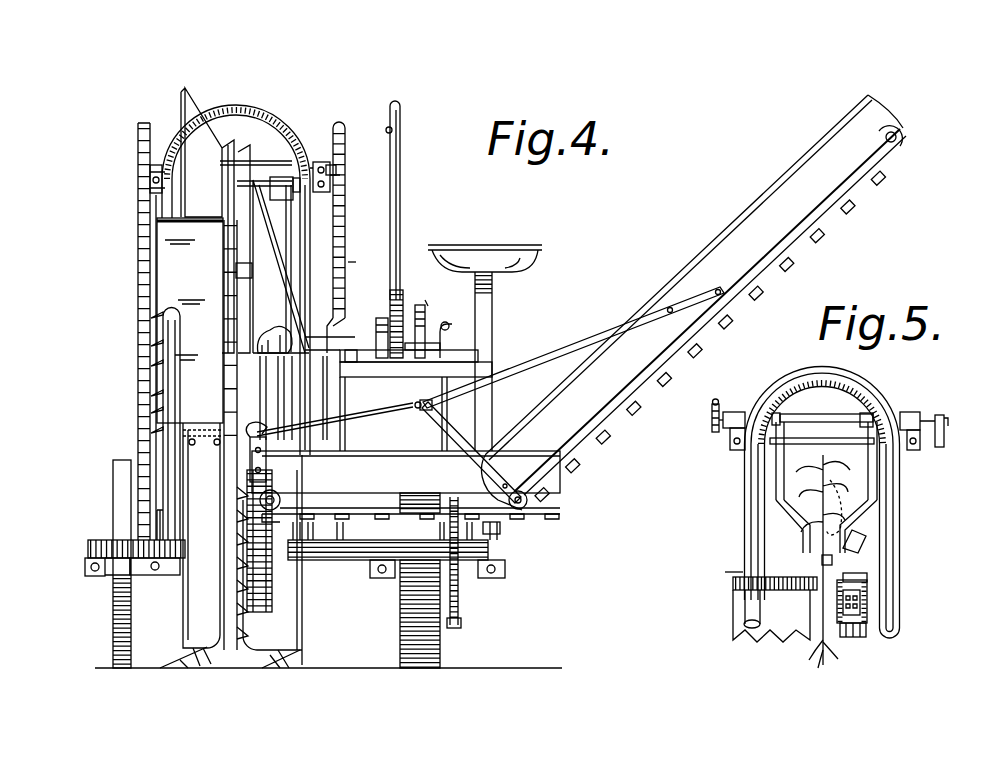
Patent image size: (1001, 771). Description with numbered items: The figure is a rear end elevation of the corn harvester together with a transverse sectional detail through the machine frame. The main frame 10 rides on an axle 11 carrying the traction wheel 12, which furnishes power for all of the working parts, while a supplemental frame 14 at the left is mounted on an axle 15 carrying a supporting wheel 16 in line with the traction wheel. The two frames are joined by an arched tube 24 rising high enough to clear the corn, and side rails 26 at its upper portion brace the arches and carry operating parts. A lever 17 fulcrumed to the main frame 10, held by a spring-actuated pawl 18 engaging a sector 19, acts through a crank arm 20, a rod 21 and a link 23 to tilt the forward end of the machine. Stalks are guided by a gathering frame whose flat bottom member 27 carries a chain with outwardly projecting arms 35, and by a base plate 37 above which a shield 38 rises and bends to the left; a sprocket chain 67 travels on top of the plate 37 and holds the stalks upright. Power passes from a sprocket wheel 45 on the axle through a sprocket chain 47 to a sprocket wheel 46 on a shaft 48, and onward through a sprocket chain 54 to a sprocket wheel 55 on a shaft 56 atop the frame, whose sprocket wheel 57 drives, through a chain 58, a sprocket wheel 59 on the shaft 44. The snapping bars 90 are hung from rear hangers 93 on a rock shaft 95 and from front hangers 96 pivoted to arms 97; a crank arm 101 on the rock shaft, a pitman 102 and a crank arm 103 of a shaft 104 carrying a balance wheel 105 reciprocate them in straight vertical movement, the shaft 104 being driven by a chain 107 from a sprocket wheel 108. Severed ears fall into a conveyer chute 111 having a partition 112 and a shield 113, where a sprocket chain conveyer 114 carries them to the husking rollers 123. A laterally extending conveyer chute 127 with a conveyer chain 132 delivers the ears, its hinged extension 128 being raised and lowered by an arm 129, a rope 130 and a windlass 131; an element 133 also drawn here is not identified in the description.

In FIG. 4, the main frame 10 is at (490, 550).
In FIG. 4, the axle 11 is at (505, 569).
In FIG. 4, the traction wheel 12 is at (462, 594).
In FIG. 4, the supplemental machine frame 14 is at (135, 546).
In FIG. 4, the axle 15 is at (122, 566).
In FIG. 4, the supporting wheel 16 is at (118, 590).
In FIG. 4, the lever 17 is at (401, 111).
In FIG. 4, the spring-actuated pawl 18 is at (401, 129).
In FIG. 4, the sector 19 is at (402, 330).
In FIG. 4, the crank arm 20 is at (425, 321).
In FIG. 4, the rod 21 is at (449, 331).
In FIG. 4, the link 23 is at (445, 440).
In FIG. 4, the arched tube 24 is at (288, 133).
In FIG. 5, the arched tube 24 is at (848, 378).
In FIG. 4, the side rails 26 is at (150, 177).
In FIG. 4, the flat bottom member 27 is at (242, 544).
In FIG. 4, the outwardly projecting arms 35 is at (201, 648).
In FIG. 4, the base plate 37 is at (221, 272).
In FIG. 5, the base plate 37 is at (775, 609).
In FIG. 4, the shield 38 is at (254, 264).
In FIG. 5, the shield 38 is at (778, 521).
In FIG. 4, the shaft 44 is at (161, 512).
In FIG. 4, the sprocket wheel 45 is at (462, 624).
In FIG. 4, the sprocket wheel 46 is at (458, 498).
In FIG. 4, the sprocket chain 47 is at (500, 527).
In FIG. 4, the shaft 48 is at (432, 506).
In FIG. 4, the sprocket chain 54 is at (347, 229).
In FIG. 4, the sprocket wheel 55 is at (341, 124).
In FIG. 4, the shaft 56 is at (258, 160).
In FIG. 5, the shaft 56 is at (722, 419).
In FIG. 4, the sprocket wheel 57 is at (148, 125).
In FIG. 4, the chain 58 is at (153, 217).
In FIG. 4, the sprocket wheel 59 is at (128, 534).
In FIG. 4, the sprocket chain 67 is at (160, 336).
In FIG. 4, the snapping bar 90 is at (238, 272).
In FIG. 5, the snapping bar 90 is at (824, 561).
In FIG. 4, the hangers 93 is at (292, 248).
In FIG. 4, the rock shaft 95 is at (252, 183).
In FIG. 5, the rock shaft 95 is at (862, 418).
In FIG. 5, the hangers 96 is at (780, 463).
In FIG. 5, the arms 97 is at (718, 404).
In FIG. 4, the crank arm 101 is at (345, 170).
In FIG. 5, the crank arm 101 is at (945, 432).
In FIG. 4, the pitman 102 is at (354, 263).
In FIG. 4, the crank arm 103 is at (364, 368).
In FIG. 4, the shaft 104 is at (470, 360).
In FIG. 4, the balance wheel 105 is at (381, 330).
In FIG. 4, the chain 107 is at (478, 347).
In FIG. 4, the sprocket wheel 108 is at (426, 306).
In FIG. 4, the conveyer chute 111 is at (274, 586).
In FIG. 5, the conveyer chute 111 is at (868, 589).
In FIG. 5, the partition 112 is at (868, 575).
In FIG. 5, the shield 113 is at (868, 546).
In FIG. 5, the sprocket chain conveyer 114 is at (853, 640).
In FIG. 4, the husking rollers 123 is at (322, 406).
In FIG. 4, the conveyer chute 127 is at (406, 472).
In FIG. 4, the hinged extension 128 is at (694, 302).
In FIG. 4, the arm 129 is at (441, 419).
In FIG. 4, the rope 130 is at (395, 411).
In FIG. 4, the windlass 131 is at (270, 463).
In FIG. 4, the conveyer chain 132 is at (622, 424).
In FIG. 4, the roller 133 is at (283, 500).